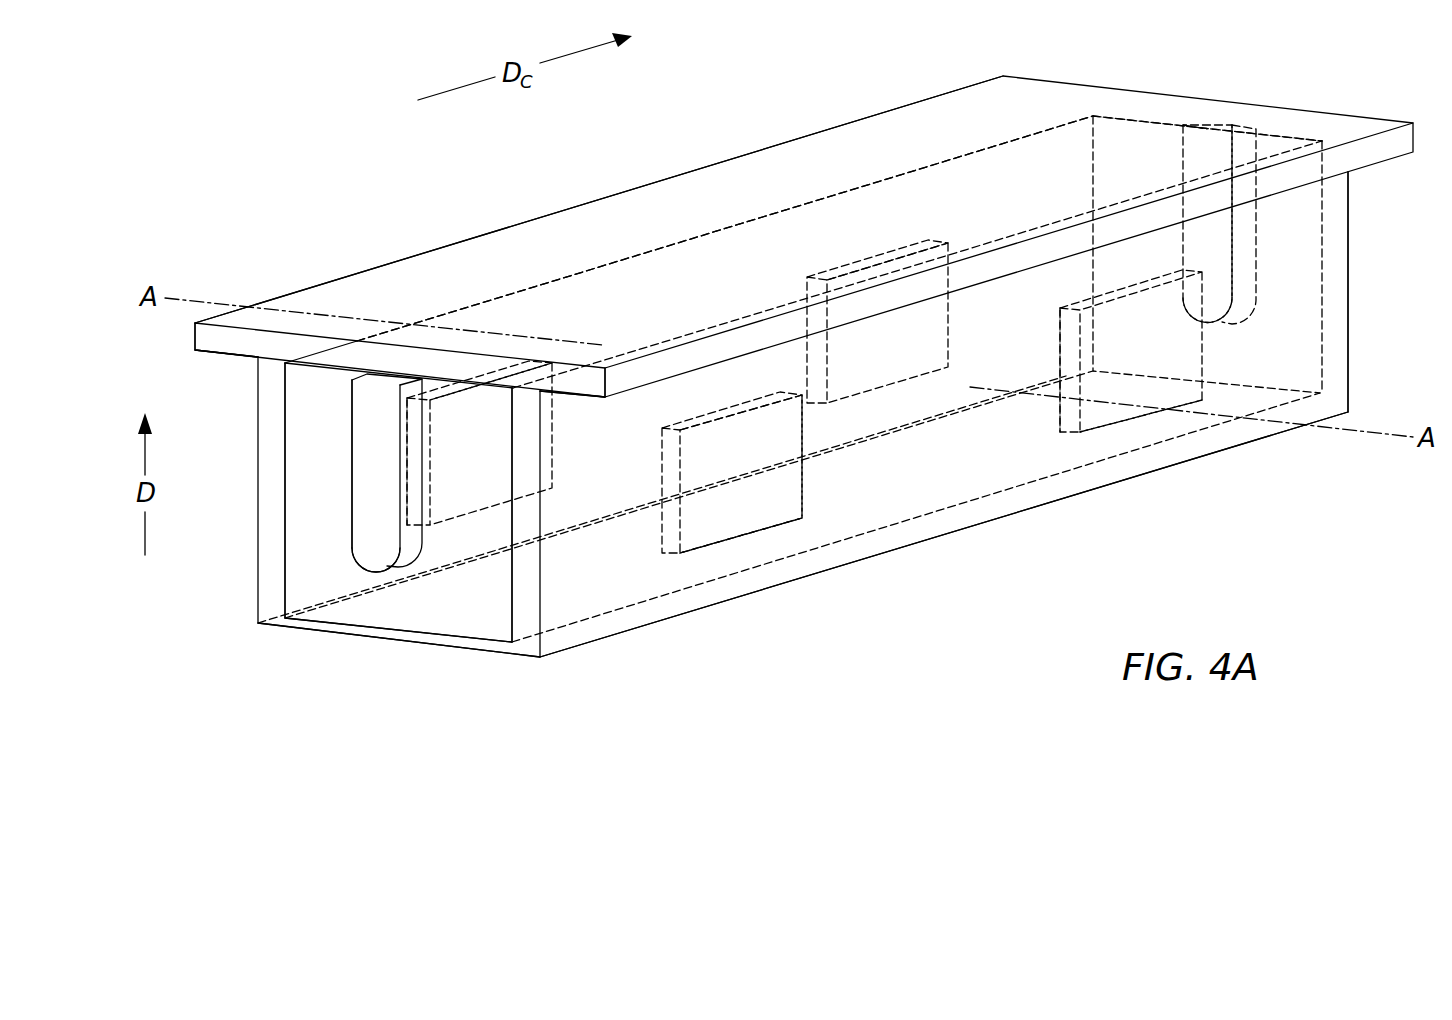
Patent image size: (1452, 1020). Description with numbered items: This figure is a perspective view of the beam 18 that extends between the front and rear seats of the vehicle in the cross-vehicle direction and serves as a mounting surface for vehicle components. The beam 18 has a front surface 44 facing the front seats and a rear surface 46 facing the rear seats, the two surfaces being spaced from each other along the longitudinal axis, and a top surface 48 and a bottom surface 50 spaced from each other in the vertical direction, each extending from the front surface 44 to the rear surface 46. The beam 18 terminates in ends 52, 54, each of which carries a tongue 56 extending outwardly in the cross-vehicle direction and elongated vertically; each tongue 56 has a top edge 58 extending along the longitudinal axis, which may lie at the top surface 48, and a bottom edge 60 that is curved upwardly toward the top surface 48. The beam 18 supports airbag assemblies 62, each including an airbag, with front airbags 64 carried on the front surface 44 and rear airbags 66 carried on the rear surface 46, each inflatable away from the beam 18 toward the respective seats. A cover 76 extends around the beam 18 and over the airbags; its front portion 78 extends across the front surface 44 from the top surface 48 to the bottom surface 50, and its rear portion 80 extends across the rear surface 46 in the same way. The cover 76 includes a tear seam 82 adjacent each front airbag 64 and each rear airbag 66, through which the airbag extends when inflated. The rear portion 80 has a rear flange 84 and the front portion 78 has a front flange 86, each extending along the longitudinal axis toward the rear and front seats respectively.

The beam 18 is at (550, 282).
The front surface 44 is at (928, 188).
The rear surface 46 is at (1255, 374).
The top surface 48 is at (1120, 118).
The bottom surface 50 is at (458, 637).
The end 52 is at (332, 579).
The end 54 is at (1322, 323).
The tongue 56 is at (350, 521).
The top edge 58 is at (383, 380).
The bottom edge 60 is at (385, 572).
The airbag assembly 62 is at (700, 558).
The front airbag 64 is at (493, 372).
The rear airbag 66 is at (790, 545).
The cover 76 is at (842, 127).
The front portion 78 is at (258, 456).
The rear portion 80 is at (540, 592).
The tear seam 82 is at (407, 462).
The rear flange 84 is at (568, 395).
The front flange 86 is at (230, 362).